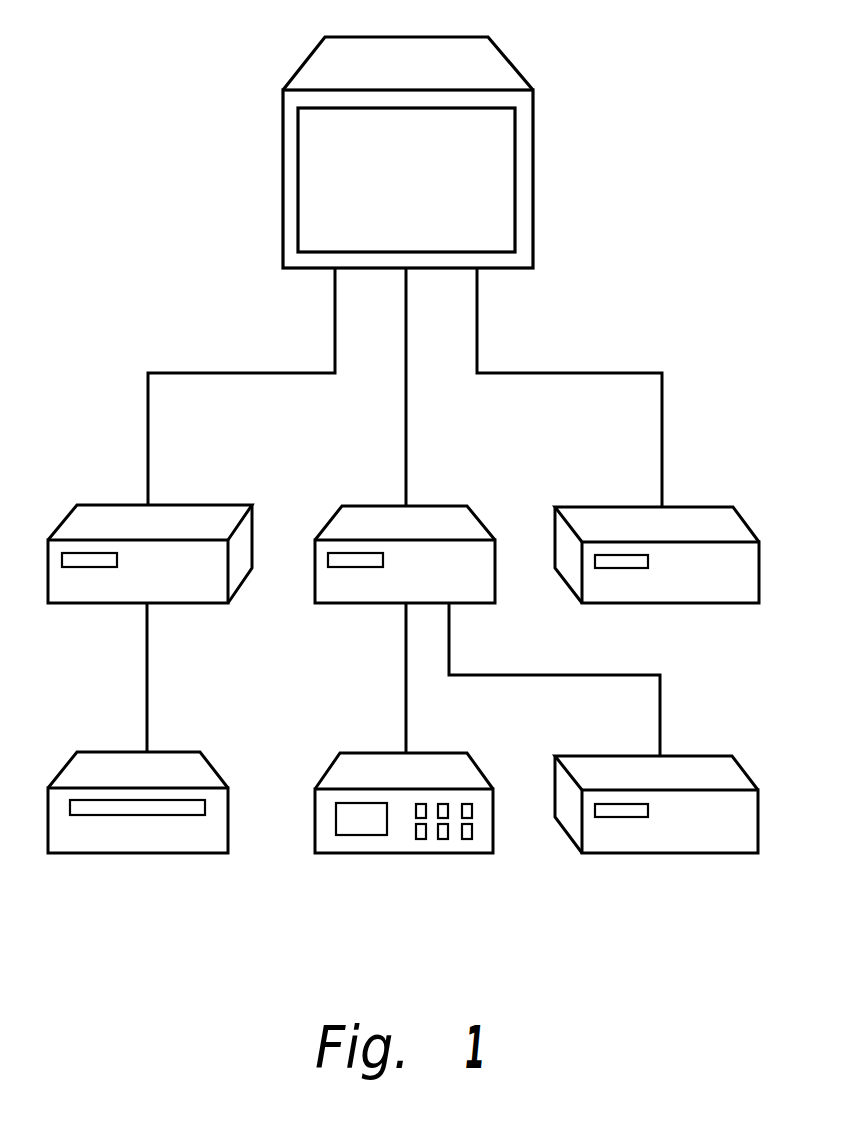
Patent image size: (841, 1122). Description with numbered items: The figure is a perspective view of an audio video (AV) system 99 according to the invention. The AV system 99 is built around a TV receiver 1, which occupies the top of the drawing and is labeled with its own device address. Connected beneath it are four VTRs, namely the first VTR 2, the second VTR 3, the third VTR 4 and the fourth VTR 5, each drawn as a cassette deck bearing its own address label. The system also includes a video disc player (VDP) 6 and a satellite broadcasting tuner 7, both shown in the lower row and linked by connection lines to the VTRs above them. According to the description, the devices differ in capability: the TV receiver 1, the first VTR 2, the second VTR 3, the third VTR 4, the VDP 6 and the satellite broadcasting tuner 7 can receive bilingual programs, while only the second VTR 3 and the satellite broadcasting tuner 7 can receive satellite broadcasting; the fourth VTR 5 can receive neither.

The audio video (AV) system 99 is at (165, 80).
The TV receiver 1 is at (488, 63).
The first VTR 2 is at (440, 515).
The second VTR 3 is at (701, 517).
The third VTR 4 is at (701, 765).
The fourth VTR 5 is at (188, 515).
The video disc player (VDP) 6 is at (188, 762).
The satellite broadcasting tuner 7 is at (439, 765).